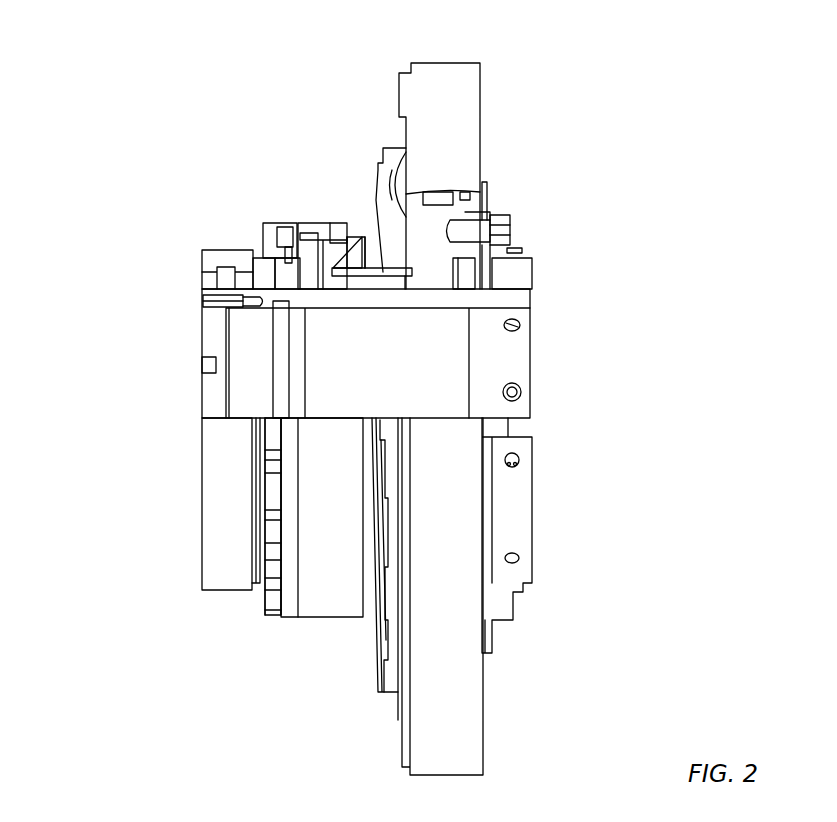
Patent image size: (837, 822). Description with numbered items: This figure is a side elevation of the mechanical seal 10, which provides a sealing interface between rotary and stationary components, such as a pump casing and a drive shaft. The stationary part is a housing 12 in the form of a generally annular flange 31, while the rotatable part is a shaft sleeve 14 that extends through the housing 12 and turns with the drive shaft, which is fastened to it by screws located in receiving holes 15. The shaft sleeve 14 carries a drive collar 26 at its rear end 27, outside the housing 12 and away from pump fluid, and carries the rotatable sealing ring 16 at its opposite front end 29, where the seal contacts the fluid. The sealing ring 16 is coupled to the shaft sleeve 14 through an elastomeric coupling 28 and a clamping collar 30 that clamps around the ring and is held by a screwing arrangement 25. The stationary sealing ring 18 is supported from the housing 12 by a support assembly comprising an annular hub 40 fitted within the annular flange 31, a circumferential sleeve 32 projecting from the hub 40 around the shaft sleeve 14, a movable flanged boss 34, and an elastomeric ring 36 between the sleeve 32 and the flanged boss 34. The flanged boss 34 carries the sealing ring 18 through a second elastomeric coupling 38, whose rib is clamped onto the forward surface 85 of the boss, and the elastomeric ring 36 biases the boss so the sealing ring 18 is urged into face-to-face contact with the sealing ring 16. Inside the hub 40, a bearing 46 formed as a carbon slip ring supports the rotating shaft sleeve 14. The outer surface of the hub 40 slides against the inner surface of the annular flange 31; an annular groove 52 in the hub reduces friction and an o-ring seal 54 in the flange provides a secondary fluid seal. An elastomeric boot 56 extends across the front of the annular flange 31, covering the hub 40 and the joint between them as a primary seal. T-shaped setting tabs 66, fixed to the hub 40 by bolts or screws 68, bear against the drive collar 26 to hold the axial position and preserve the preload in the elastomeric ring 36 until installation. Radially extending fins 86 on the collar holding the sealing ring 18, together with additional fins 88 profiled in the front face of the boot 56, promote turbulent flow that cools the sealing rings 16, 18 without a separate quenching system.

The mechanical seal 10 is at (712, 100).
The housing 12 is at (487, 738).
The shaft sleeve 14 is at (482, 365).
The receiving holes 15 is at (513, 325).
The sealing ring 16 is at (243, 268).
The sealing ring 18 is at (270, 268).
The screwing arrangement 25 is at (218, 298).
The drive collar 26 is at (515, 282).
The rear end 27 is at (695, 358).
The elastomeric coupling 28 is at (220, 275).
The front end 29 is at (142, 372).
The clamping collar 30 is at (207, 273).
The annular flange 31 is at (463, 105).
The sleeve 32 is at (368, 267).
The flanged boss 34 is at (330, 230).
The elastomeric ring 36 is at (352, 253).
The elastomeric coupling 38 is at (290, 262).
The hub 40 is at (488, 228).
The bearing 46 is at (460, 277).
The annular groove 52 is at (430, 205).
The o-ring seal 54 is at (468, 215).
The elastomeric boot 56 is at (378, 165).
The setting tabs 66 is at (525, 250).
The bolts or screws 68 is at (512, 224).
The forward surface 85 is at (273, 562).
The fins 86 is at (272, 535).
The fins 88 is at (392, 598).